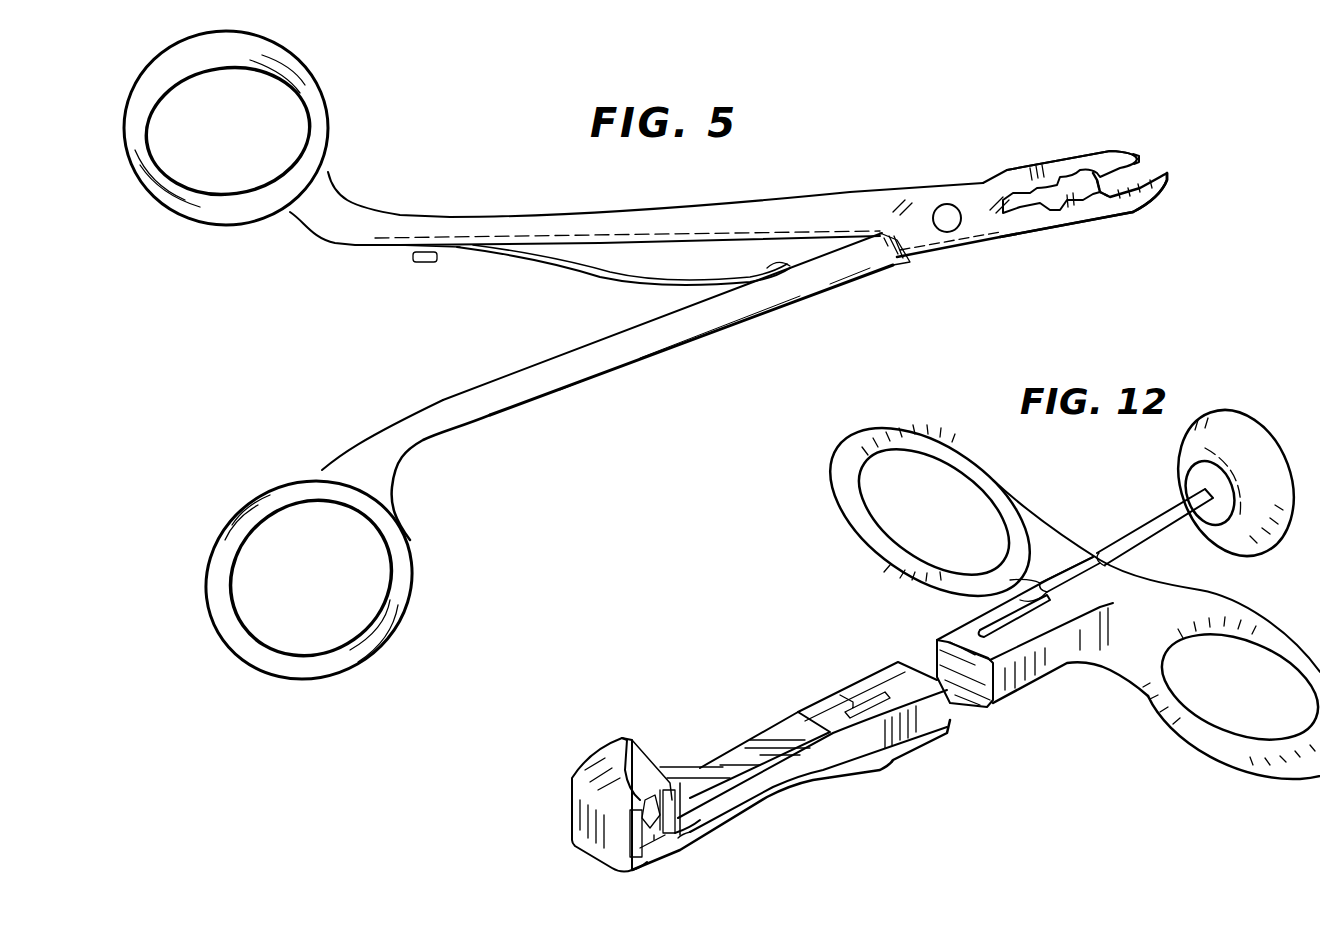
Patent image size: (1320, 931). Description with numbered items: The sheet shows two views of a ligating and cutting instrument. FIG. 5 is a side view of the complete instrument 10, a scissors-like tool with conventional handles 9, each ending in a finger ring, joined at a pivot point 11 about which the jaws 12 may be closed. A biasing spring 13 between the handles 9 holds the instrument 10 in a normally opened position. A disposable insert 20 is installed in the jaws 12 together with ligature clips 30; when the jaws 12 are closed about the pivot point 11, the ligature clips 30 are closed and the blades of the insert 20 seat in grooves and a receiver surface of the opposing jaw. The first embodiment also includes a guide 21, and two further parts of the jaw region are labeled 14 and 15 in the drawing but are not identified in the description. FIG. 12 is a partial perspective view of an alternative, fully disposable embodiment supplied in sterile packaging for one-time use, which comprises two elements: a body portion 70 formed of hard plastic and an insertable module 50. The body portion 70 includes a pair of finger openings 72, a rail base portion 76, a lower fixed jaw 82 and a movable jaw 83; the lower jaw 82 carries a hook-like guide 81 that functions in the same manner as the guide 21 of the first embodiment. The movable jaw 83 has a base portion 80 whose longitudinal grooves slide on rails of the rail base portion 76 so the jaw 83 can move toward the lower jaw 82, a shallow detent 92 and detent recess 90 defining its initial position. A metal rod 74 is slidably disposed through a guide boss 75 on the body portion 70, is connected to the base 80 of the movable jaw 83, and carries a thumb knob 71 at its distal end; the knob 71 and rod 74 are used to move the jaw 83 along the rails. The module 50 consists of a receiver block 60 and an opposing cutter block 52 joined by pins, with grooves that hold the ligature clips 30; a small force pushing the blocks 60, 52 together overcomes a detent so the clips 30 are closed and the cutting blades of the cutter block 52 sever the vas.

In FIG. 5, the handles 9 is at (237, 203).
In FIG. 5, the instrument 10 is at (318, 326).
In FIG. 5, the pivot point 11 is at (950, 206).
In FIG. 5, the jaws 12 is at (1013, 250).
In FIG. 5, the biasing spring 13 is at (578, 279).
In FIG. 5, the upper jaw 14 is at (1113, 160).
In FIG. 5, the lower jaw 15 is at (1100, 212).
In FIG. 5, the disposable insert 20 is at (1137, 156).
In FIG. 5, the guide 21 is at (1162, 196).
In FIG. 5, the ligature clips 30 is at (1128, 180).
In FIG. 12, the insertable module 50 is at (672, 872).
In FIG. 12, the cutter block 52 is at (671, 833).
In FIG. 12, the receiver block 60 is at (633, 865).
In FIG. 12, the body portion 70 is at (1088, 720).
In FIG. 12, the thumb knob 71 is at (1270, 475).
In FIG. 12, the finger openings 72 is at (977, 482).
In FIG. 12, the metal rod 74 is at (1173, 507).
In FIG. 12, the guide boss 75 is at (1066, 567).
In FIG. 12, the rail base portion 76 is at (877, 753).
In FIG. 12, the base portion 80 is at (795, 722).
In FIG. 12, the hook-like guide 81 is at (614, 750).
In FIG. 12, the lower fixed jaw 82 is at (583, 810).
In FIG. 12, the movable jaw 83 is at (648, 768).
In FIG. 12, the detent recess 90 is at (702, 830).
In FIG. 12, the shallow detent 92 is at (768, 798).